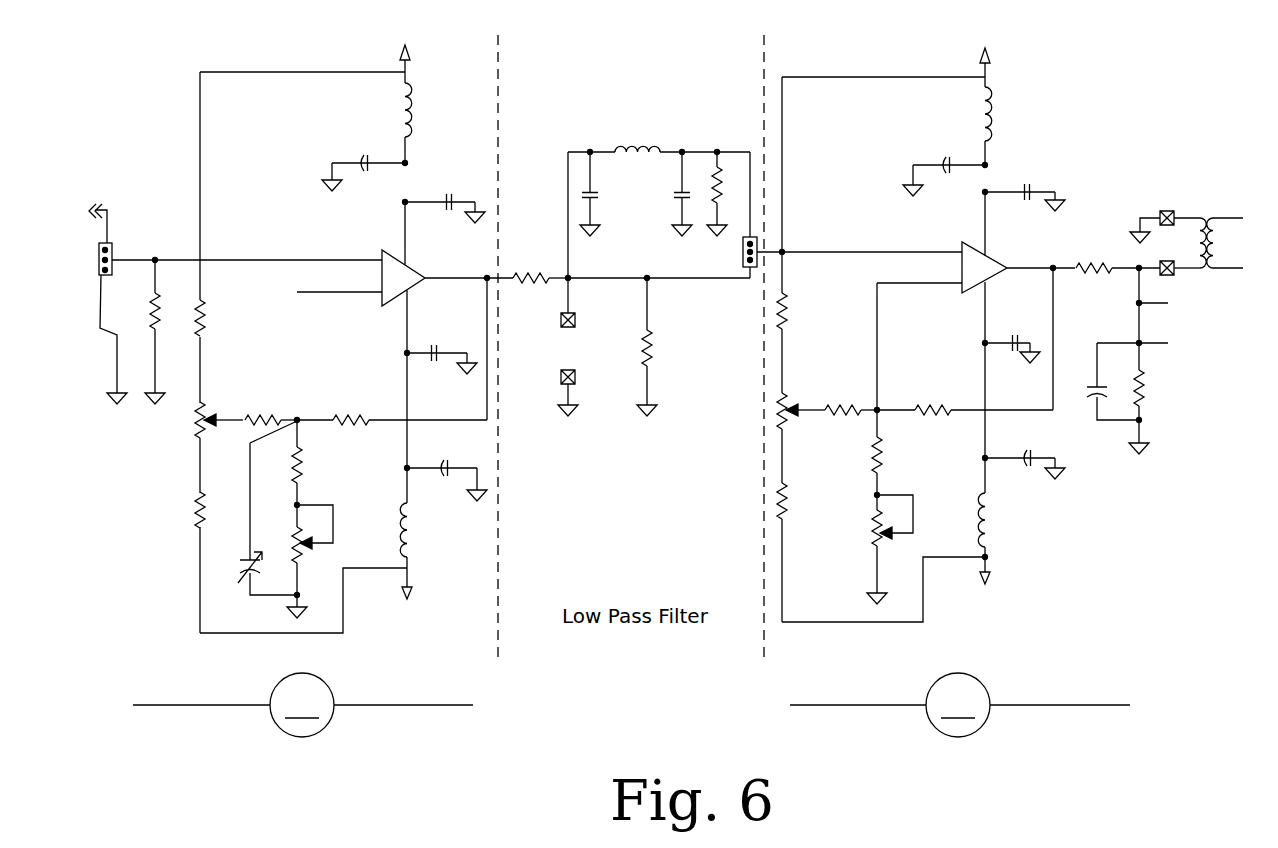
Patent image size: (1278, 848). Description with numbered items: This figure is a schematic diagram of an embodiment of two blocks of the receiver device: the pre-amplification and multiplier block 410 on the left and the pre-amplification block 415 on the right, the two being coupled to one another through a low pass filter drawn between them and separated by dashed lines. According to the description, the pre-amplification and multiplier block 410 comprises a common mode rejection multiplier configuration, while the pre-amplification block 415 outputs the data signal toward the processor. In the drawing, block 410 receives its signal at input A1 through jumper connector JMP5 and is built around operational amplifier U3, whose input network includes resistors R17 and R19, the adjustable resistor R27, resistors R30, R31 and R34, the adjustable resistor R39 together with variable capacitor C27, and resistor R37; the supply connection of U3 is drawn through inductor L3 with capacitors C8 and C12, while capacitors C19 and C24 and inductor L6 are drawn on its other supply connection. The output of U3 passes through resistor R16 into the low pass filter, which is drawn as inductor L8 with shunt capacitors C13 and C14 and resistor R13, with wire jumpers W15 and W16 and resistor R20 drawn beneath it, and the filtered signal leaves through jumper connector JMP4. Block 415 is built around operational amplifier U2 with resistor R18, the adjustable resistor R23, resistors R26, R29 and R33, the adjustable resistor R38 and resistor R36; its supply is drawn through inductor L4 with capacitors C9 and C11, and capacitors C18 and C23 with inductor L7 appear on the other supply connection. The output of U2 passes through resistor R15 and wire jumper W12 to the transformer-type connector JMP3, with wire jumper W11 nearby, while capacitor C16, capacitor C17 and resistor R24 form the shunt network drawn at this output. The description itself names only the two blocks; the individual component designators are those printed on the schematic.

The input signal A1 is at (83, 223).
The jumper connector JMP5 is at (92, 322).
The resistor R17 is at (164, 331).
The resistor R19 is at (210, 329).
The potentiometer R27 is at (202, 433).
The resistor R30 is at (270, 412).
The resistor R31 is at (392, 412).
The resistor R34 is at (311, 463).
The potentiometer R39 is at (295, 553).
The variable capacitor C27 is at (257, 509).
The resistor R37 is at (182, 539).
The inductor L6 is at (416, 533).
The capacitor C24 is at (446, 473).
The capacitor C19 is at (441, 358).
The operational amplifier U3 is at (405, 335).
The inductor L3 is at (416, 104).
The capacitor C8 is at (365, 169).
The capacitor C12 is at (444, 207).
The resistor R16 is at (538, 269).
The inductor L8 is at (659, 140).
The capacitor C13 is at (604, 193).
The capacitor C14 is at (665, 193).
The resistor R13 is at (727, 193).
The jumper connector JMP4 is at (826, 260).
The wire jumper W15 is at (586, 304).
The wire jumper W16 is at (585, 393).
The resistor R20 is at (658, 346).
The inductor L4 is at (995, 106).
The capacitor C9 is at (945, 167).
The capacitor C11 is at (1024, 188).
The operational amplifier U2 is at (976, 325).
The resistor R18 is at (797, 327).
The potentiometer R23 is at (783, 430).
The resistor R26 is at (843, 402).
The resistor R29 is at (965, 402).
The resistor R33 is at (889, 454).
The potentiometer R38 is at (875, 544).
The resistor R36 is at (797, 534).
The capacitor C18 is at (1012, 348).
The capacitor C23 is at (1024, 464).
The inductor L7 is at (993, 521).
The resistor R15 is at (1105, 259).
The wire jumper W12 is at (1174, 260).
The wire jumper W11 is at (1165, 218).
The transformer / jumper JMP3 is at (1229, 261).
The capacitor C16 is at (1151, 307).
The capacitor C17 is at (1162, 368).
The resistor R24 is at (1149, 398).
The pre-amplification and multiplier block 410 is at (303, 705).
The pre-amplification block 415 is at (960, 705).